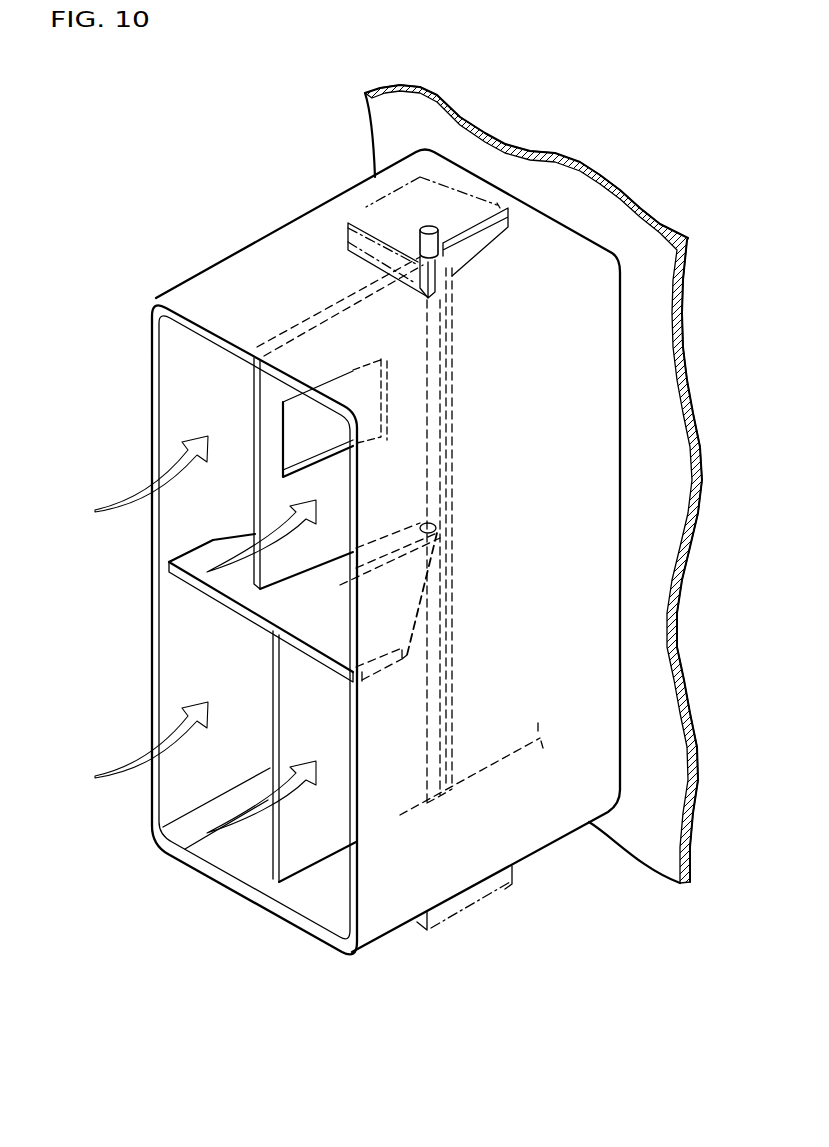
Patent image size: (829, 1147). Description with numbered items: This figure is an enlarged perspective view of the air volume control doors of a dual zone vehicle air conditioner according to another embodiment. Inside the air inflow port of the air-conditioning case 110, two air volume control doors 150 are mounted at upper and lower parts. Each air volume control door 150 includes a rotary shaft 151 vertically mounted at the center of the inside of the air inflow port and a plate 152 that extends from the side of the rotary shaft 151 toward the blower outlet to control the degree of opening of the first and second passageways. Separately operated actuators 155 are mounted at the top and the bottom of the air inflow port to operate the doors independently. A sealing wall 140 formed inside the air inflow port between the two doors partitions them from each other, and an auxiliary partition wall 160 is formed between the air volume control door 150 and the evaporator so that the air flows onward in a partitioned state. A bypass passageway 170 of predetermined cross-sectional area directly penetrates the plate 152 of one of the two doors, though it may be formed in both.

The air-conditioning case 110 is at (648, 300).
The sealing wall 140 is at (210, 587).
The air volume control door 150 is at (190, 138).
The rotary shaft 151 is at (420, 228).
The plate 152 is at (343, 309).
The actuator 155 is at (392, 197).
The auxiliary partition wall 160 is at (497, 760).
The bypass passageway 170 is at (283, 437).